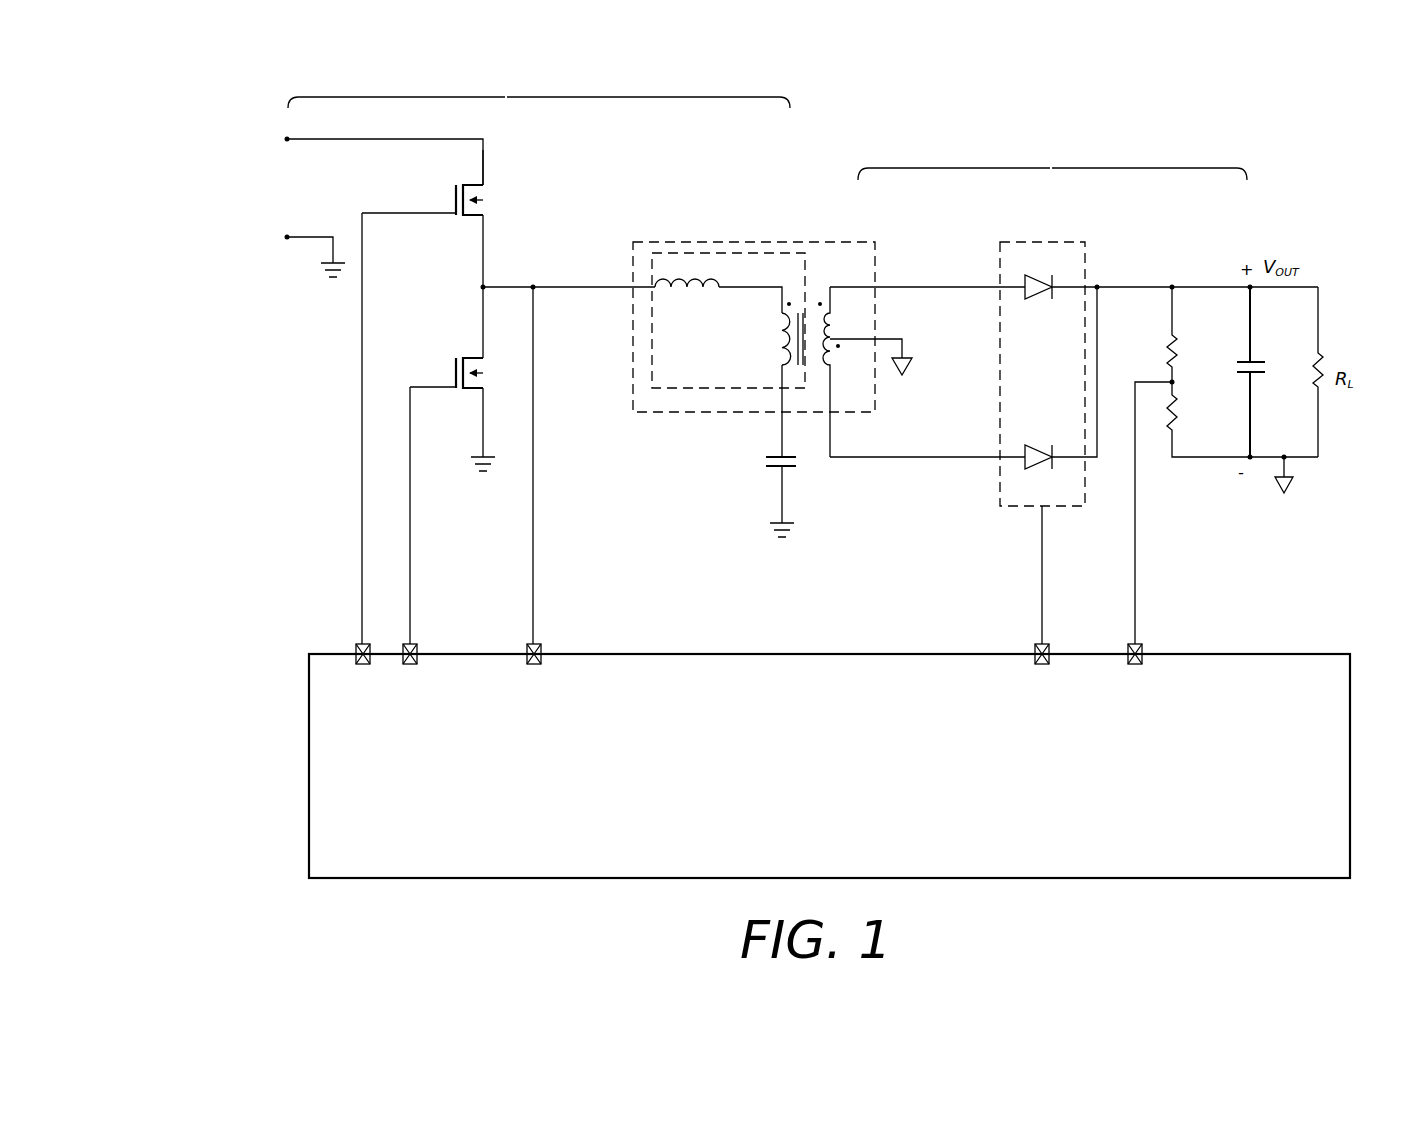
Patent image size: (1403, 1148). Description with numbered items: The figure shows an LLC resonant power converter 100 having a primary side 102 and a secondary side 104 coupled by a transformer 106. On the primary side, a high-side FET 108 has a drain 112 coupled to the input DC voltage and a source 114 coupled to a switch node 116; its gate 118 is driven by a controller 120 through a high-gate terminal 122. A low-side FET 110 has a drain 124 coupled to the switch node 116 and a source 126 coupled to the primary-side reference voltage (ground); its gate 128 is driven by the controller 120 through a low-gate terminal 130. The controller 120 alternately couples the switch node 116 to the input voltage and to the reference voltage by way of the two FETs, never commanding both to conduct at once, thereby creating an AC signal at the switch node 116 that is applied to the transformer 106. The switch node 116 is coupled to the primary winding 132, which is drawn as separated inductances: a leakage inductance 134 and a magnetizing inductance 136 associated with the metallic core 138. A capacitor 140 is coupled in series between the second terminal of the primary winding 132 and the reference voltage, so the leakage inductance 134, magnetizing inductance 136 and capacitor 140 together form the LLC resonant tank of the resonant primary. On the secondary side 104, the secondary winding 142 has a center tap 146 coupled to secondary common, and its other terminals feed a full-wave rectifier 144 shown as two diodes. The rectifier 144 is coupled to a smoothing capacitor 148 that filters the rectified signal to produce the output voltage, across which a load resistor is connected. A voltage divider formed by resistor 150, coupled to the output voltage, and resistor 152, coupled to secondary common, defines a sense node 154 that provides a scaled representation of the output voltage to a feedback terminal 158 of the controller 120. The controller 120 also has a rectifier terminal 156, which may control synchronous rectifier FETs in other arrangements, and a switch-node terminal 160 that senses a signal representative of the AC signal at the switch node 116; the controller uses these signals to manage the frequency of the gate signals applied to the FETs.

The power converter 100 is at (270, 96).
The primary side 102 is at (505, 97).
The secondary side 104 is at (1050, 168).
The transformer 106 is at (858, 242).
The high-side field effect transistor 108 is at (492, 195).
The low-side FET 110 is at (470, 345).
The drain 112 is at (486, 158).
The source 114 is at (486, 222).
The switch node 116 is at (490, 272).
The gate 118 is at (433, 212).
The controller 120 is at (829, 766).
The high-gate terminal 122 is at (355, 644).
The drain 124 is at (486, 318).
The source 126 is at (486, 405).
The gate 128 is at (440, 386).
The low-gate terminal 130 is at (420, 650).
The primary winding 132 is at (713, 252).
The leakage inductance 134 is at (683, 292).
The magnetizing inductance 136 is at (780, 345).
The metallic core 138 is at (812, 288).
The capacitor 140 is at (800, 470).
The secondary winding 142 is at (840, 325).
The full-wave rectifier 144 is at (1086, 246).
The center tap 146 is at (906, 347).
The smoothing capacitor 148 is at (1255, 357).
The resistor 150 is at (1168, 348).
The resistor 152 is at (1178, 427).
The sense node 154 is at (1176, 383).
The rectifier terminal 156 is at (1035, 645).
The feedback terminal 158 is at (1145, 645).
The switch-node terminal 160 is at (527, 645).